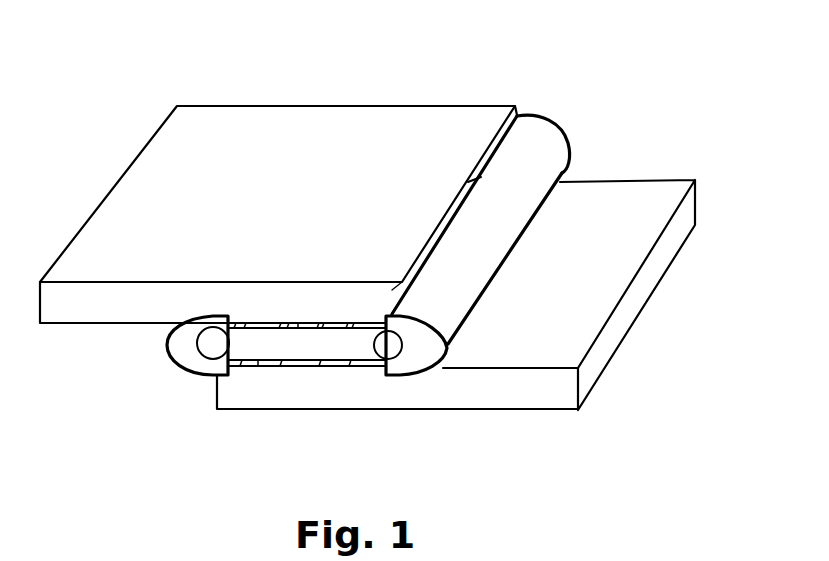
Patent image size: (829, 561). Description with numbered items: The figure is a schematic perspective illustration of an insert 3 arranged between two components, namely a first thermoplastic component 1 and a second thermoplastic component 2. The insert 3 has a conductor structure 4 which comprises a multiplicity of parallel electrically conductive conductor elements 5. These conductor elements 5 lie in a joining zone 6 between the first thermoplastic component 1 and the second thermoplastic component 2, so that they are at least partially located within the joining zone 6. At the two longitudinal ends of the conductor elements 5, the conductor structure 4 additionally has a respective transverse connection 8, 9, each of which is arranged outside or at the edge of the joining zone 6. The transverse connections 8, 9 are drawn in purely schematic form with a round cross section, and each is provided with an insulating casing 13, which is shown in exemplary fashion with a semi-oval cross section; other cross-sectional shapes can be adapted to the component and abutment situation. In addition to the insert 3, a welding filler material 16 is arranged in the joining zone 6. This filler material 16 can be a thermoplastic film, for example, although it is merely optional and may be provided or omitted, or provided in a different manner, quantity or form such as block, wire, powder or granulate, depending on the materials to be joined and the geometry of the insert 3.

The first thermoplastic component 1 is at (157, 161).
The second thermoplastic component 2 is at (643, 232).
The insert 3 is at (553, 137).
The conductor structure 4 is at (403, 343).
The conductor elements 5 is at (343, 347).
The joining zone 6 is at (308, 306).
The transverse connection 8 is at (212, 353).
The transverse connection 9 is at (403, 328).
The insulating casing 13 is at (400, 378).
The welding filler material 16 is at (262, 366).